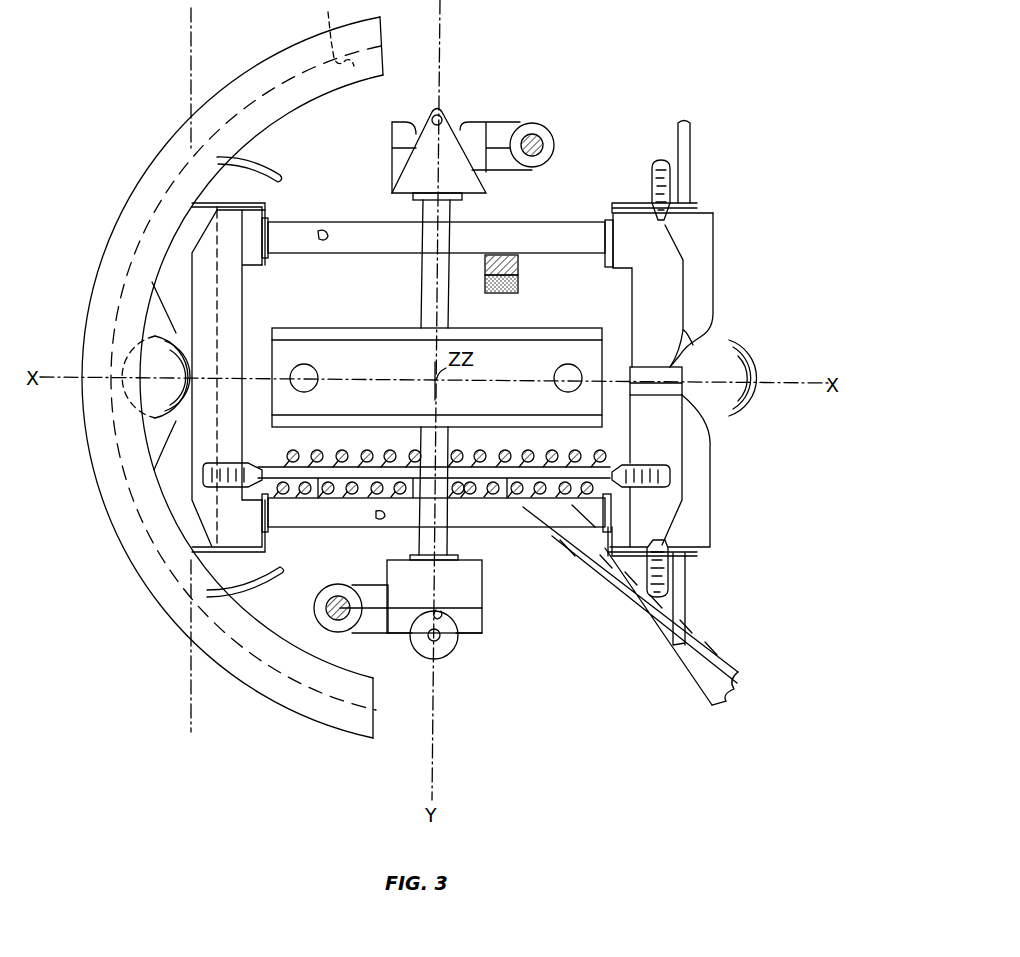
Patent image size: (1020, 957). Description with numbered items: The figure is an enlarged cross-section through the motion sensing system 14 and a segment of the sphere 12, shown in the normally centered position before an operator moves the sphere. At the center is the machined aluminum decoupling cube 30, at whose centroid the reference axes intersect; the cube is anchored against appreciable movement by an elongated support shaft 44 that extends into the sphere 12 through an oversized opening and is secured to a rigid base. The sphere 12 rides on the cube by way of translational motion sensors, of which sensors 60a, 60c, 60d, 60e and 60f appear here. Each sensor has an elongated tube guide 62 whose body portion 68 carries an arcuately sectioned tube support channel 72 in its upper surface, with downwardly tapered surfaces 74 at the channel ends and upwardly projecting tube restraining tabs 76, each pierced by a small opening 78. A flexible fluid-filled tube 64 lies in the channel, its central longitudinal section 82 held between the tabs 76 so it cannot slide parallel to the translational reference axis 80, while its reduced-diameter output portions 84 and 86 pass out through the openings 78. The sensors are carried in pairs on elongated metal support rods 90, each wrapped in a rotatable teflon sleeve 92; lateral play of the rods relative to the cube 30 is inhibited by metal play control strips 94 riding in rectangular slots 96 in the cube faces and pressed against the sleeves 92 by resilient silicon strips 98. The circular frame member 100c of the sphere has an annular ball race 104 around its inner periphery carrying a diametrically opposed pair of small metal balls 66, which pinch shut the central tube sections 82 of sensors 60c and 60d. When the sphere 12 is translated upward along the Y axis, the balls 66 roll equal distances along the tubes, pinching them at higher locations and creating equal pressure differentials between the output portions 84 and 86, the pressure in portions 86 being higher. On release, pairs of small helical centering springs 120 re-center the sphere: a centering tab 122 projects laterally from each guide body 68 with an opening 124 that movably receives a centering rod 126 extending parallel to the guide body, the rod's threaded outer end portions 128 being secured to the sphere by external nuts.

The sphere 12 is at (120, 551).
The motion sensing system 14 is at (612, 100).
The decoupling cube 30 is at (560, 262).
The support shaft 44 is at (700, 634).
The translational motion sensor 60a is at (564, 320).
The translational motion sensor 60c is at (172, 563).
The translational motion sensor 60d is at (710, 192).
The translational motion sensor 60e is at (448, 665).
The translational motion sensor 60f is at (448, 86).
The tube guide 62 is at (677, 301).
The flexible tube 64 is at (165, 446).
The ball 66 is at (170, 367).
The body portion 68 is at (392, 164).
The tube support channel 72 is at (216, 318).
The tapered surfaces 74 is at (392, 130).
The tube restraining tab 76 is at (262, 204).
The opening 78 is at (444, 112).
The translational reference axis 80 is at (191, 40).
The central longitudinal section 82 is at (165, 298).
The tube end portion 84 is at (688, 603).
The tube end portion 86 is at (691, 154).
The support rod 90 is at (322, 230).
The teflon sleeve 92 is at (397, 252).
The play control strip 94 is at (497, 255).
The slot 96 is at (500, 293).
The resilient silicon strip 98 is at (512, 255).
The circular frame member 100c is at (165, 147).
The ball race 104 is at (332, 22).
The centering spring 120 is at (555, 150).
The centering tab 122 is at (686, 338).
The opening 124 is at (500, 132).
The centering rod 126 is at (532, 134).
The threaded outer end portion 128 is at (661, 160).